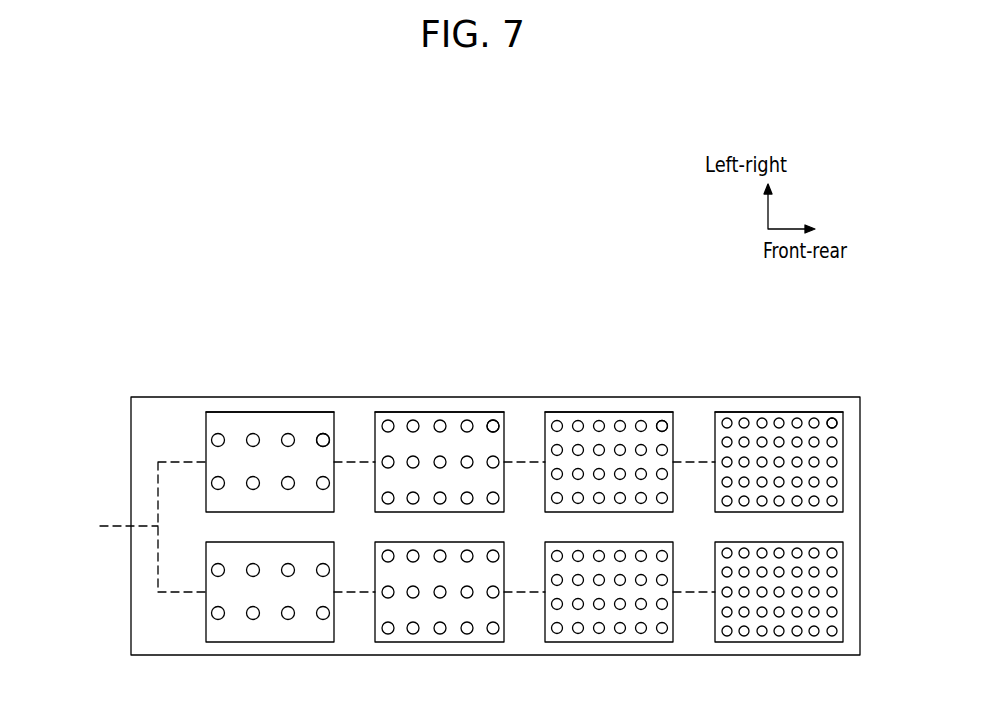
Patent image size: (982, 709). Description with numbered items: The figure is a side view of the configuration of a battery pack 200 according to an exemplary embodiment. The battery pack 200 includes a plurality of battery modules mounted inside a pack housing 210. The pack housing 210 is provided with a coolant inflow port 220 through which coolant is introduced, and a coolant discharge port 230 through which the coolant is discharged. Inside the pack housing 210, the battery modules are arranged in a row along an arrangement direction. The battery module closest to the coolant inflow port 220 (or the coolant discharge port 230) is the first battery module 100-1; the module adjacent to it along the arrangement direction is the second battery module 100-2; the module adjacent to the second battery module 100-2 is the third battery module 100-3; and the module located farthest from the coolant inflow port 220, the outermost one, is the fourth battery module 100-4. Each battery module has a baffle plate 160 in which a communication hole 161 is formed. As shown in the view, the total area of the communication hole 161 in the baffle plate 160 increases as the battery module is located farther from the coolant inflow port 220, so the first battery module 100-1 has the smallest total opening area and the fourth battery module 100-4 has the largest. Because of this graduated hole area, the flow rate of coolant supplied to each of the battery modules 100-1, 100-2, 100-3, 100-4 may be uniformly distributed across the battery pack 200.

The battery pack 200 is at (446, 300).
The pack housing 210 is at (538, 397).
The coolant inflow port 220 is at (388, 527).
The coolant discharge port 230 is at (113, 528).
The first battery module 100-1 is at (260, 411).
The second battery module 100-2 is at (438, 411).
The third battery module 100-3 is at (625, 411).
The fourth battery module 100-4 is at (786, 411).
The baffle plate 160 is at (220, 411).
The communication hole 161 is at (322, 434).